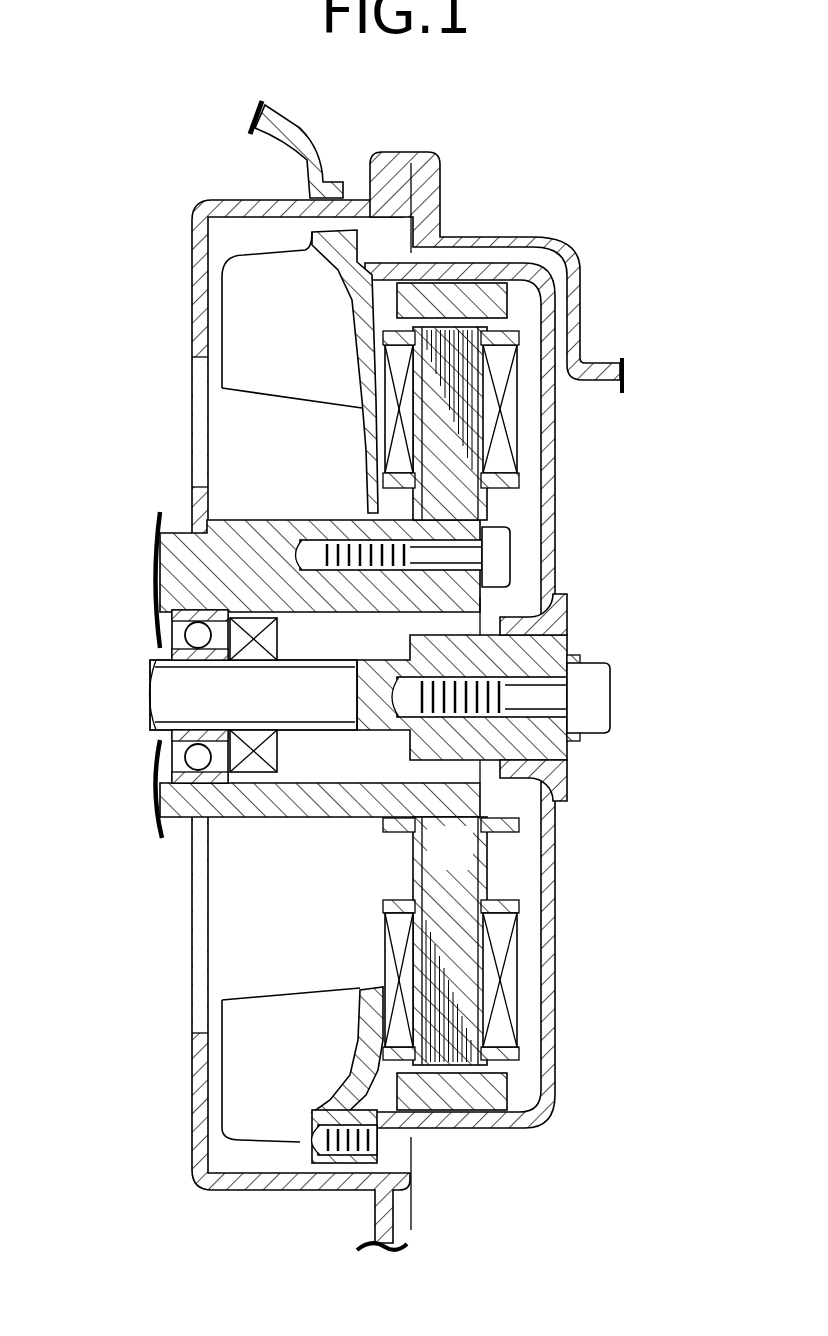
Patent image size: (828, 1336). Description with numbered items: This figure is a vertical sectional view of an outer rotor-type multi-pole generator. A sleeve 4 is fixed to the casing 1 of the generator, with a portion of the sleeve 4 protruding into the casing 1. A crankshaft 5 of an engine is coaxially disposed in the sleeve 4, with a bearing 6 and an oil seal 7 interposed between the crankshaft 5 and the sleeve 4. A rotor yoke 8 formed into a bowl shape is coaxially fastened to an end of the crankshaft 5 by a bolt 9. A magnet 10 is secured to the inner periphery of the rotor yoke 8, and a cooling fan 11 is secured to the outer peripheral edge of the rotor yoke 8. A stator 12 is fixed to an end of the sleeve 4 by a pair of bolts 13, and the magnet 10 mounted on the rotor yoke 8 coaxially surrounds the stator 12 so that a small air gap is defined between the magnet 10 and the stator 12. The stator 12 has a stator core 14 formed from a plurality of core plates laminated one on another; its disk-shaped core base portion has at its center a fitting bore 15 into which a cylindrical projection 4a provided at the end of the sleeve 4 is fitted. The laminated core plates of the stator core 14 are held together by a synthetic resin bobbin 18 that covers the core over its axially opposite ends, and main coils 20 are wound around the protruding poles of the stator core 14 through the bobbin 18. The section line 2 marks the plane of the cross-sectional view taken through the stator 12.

The casing 1 is at (192, 295).
The section line 2- 2 is at (517, 212).
The sleeve 4 is at (243, 520).
The cylindrical projection 4a is at (513, 790).
The crankshaft 5 is at (188, 699).
The bearing 6 is at (198, 760).
The oil seal 7 is at (251, 767).
The rotor yoke 8 is at (556, 487).
The bolt 9 is at (590, 698).
The magnet 10 is at (457, 1097).
The cooling fan 11 is at (247, 353).
The stator 12 is at (522, 321).
The bolts 13 is at (490, 553).
The stator core 14 is at (468, 869).
The fitting bore 15 is at (437, 784).
The bobbin 18 is at (487, 875).
The main coils 20 is at (507, 980).